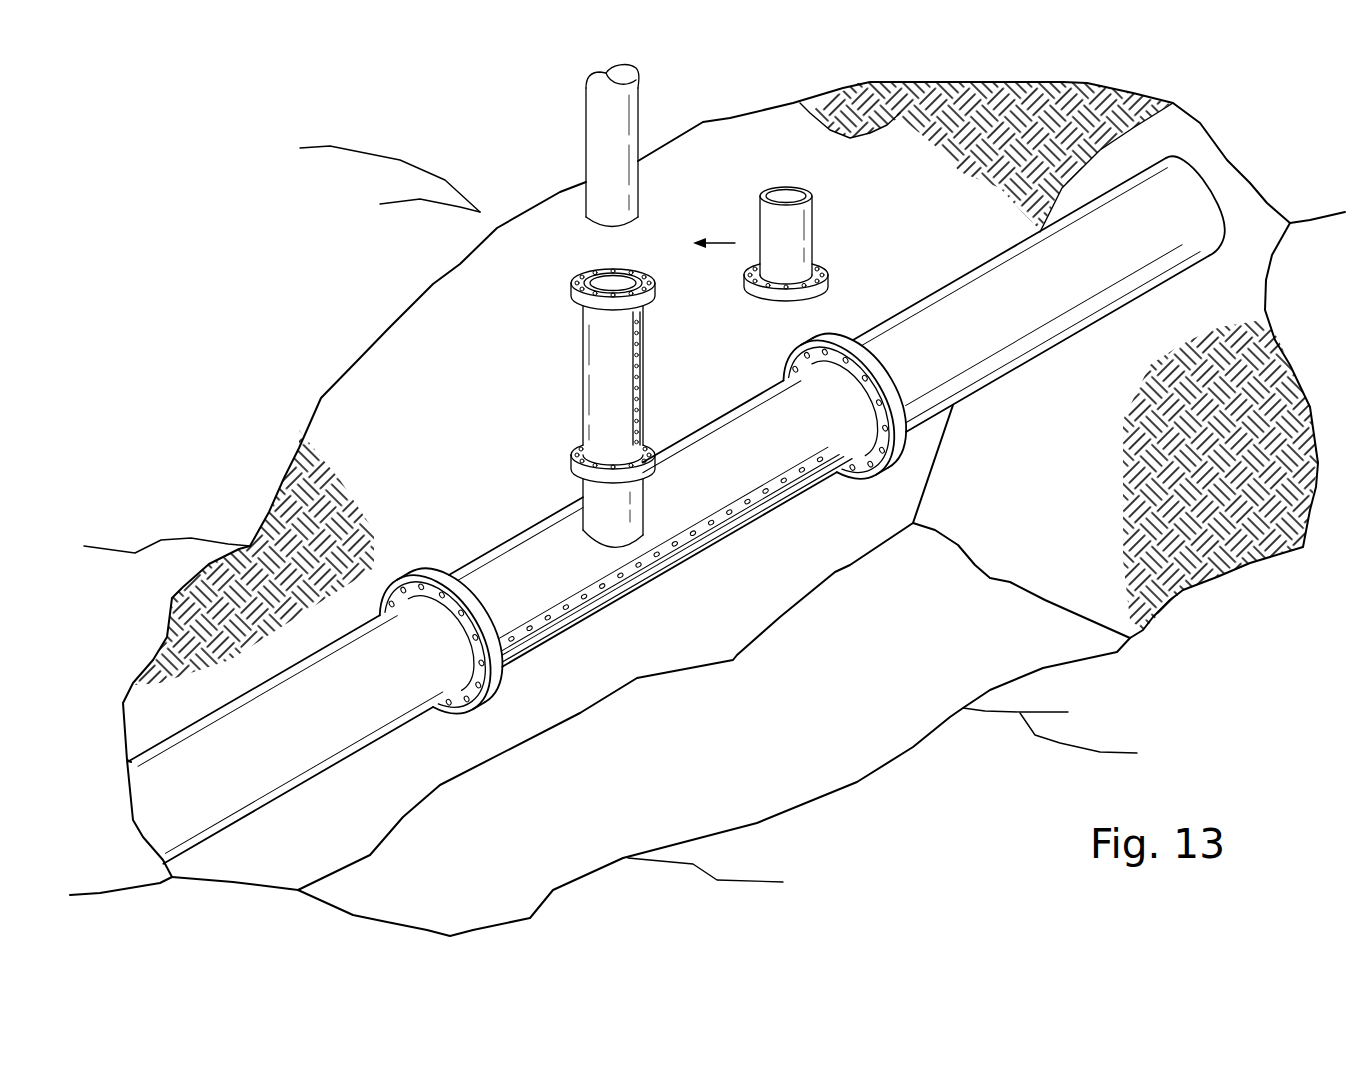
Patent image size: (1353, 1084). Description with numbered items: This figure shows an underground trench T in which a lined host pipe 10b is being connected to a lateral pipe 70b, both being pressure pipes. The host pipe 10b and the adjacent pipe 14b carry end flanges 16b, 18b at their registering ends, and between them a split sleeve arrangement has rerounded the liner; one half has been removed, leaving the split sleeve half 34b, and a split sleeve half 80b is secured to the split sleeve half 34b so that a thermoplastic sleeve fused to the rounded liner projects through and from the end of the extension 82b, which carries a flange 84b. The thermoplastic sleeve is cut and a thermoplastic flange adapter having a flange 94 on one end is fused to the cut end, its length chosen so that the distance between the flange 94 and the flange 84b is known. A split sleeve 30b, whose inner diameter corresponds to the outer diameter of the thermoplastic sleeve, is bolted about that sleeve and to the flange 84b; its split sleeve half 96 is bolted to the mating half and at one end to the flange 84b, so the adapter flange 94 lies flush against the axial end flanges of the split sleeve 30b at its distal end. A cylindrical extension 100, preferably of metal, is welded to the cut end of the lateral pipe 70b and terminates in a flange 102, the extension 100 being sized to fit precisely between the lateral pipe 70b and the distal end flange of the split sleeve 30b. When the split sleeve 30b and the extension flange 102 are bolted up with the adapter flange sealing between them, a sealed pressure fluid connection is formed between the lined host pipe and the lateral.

The trench T is at (800, 105).
The lined host pipe 10b is at (257, 766).
The adjacent pipe 14b is at (1023, 321).
The first flange 16b is at (465, 712).
The second flange 18b is at (900, 397).
The split sleeve 30b is at (556, 418).
The split sleeve half 34b is at (543, 643).
The lateral pipe 70b is at (593, 128).
The split sleeve half 80b is at (478, 582).
The extension 82b is at (632, 536).
The flange 84b is at (577, 488).
The flange 94 is at (605, 268).
The split sleeve half 96 is at (587, 355).
The cylindrical extension 100 is at (808, 232).
The flange 102 is at (766, 302).